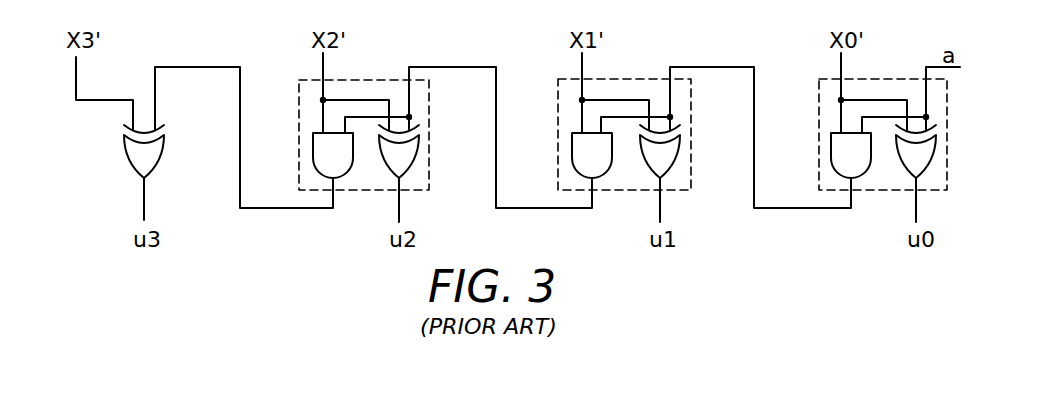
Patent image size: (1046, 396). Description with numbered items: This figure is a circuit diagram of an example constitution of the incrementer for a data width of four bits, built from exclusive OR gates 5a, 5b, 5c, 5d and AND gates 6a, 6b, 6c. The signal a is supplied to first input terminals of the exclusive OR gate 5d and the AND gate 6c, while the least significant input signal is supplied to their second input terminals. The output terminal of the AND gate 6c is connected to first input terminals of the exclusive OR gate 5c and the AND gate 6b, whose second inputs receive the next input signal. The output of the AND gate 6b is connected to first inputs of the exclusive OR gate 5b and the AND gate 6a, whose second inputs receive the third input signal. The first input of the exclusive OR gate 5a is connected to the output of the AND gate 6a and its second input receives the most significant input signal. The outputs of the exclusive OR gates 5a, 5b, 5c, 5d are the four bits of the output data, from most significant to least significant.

The exclusive OR gate 5a is at (161, 153).
The exclusive OR gate 5b is at (418, 157).
The exclusive OR gate 5c is at (676, 159).
The exclusive OR gate 5d is at (908, 165).
The AND gate 6a is at (313, 157).
The AND gate 6b is at (577, 158).
The AND gate 6c is at (838, 163).